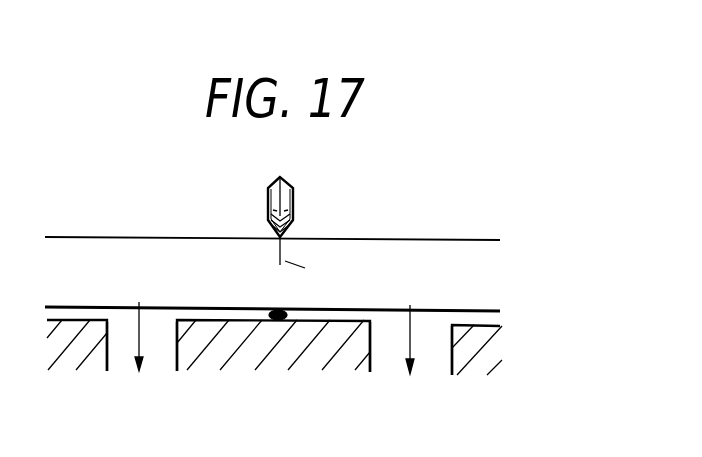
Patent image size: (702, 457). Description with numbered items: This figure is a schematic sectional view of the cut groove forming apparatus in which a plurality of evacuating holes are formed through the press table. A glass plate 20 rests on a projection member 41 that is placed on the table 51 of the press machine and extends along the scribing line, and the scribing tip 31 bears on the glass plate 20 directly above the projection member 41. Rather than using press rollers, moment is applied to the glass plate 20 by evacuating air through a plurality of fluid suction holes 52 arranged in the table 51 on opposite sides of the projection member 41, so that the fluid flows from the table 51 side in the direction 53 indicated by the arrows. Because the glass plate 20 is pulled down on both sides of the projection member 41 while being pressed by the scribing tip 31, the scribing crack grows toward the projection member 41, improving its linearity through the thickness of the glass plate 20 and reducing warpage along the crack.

The glass plate 20 is at (497, 266).
The scribing tip 31 is at (293, 185).
The projection member 41 is at (272, 320).
The table 51 is at (503, 353).
The fluid suction holes 52 is at (158, 362).
The direction of fluid flow 53 is at (137, 342).